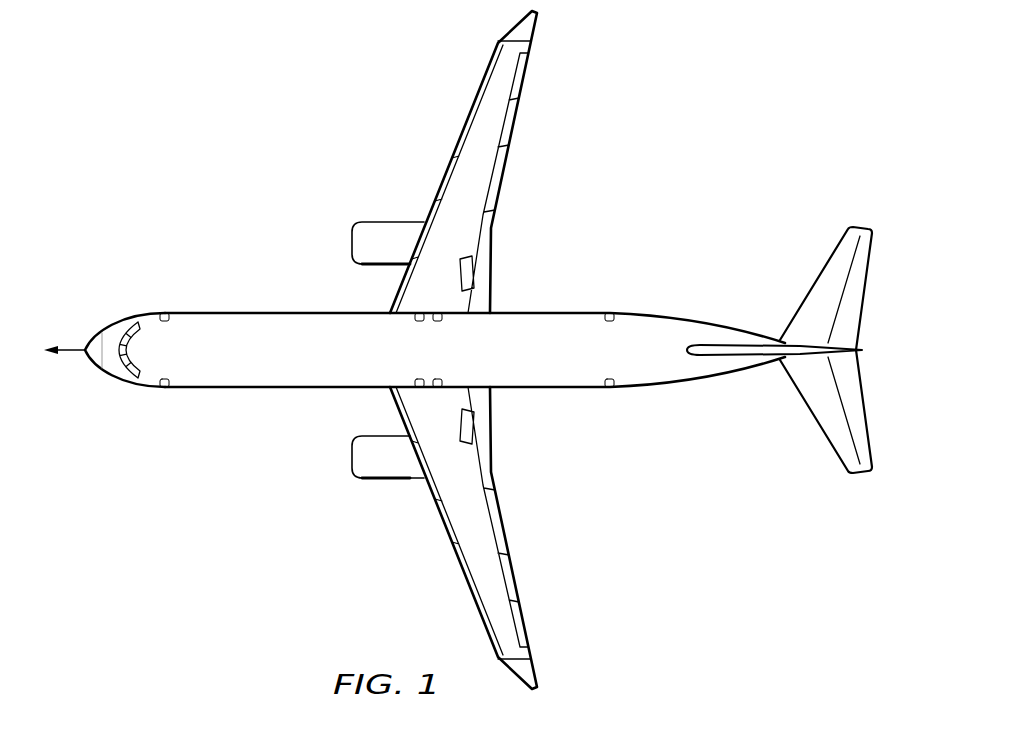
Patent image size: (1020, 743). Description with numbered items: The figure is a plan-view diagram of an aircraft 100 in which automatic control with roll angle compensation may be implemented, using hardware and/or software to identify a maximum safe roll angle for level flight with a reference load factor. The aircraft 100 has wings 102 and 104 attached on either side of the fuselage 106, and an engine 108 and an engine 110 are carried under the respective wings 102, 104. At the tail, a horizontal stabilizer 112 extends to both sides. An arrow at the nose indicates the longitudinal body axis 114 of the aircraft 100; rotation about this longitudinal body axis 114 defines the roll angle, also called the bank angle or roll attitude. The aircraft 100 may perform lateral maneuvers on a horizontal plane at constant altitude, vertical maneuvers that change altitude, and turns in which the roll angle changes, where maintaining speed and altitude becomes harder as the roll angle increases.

The aircraft 100 is at (483, 350).
The wing 102 is at (440, 177).
The wing 104 is at (442, 522).
The fuselage 106 is at (240, 311).
The engine 108 is at (352, 238).
The engine 110 is at (352, 462).
The horizontal stabilizer 112 is at (862, 302).
The longitudinal body axis 114 is at (63, 348).